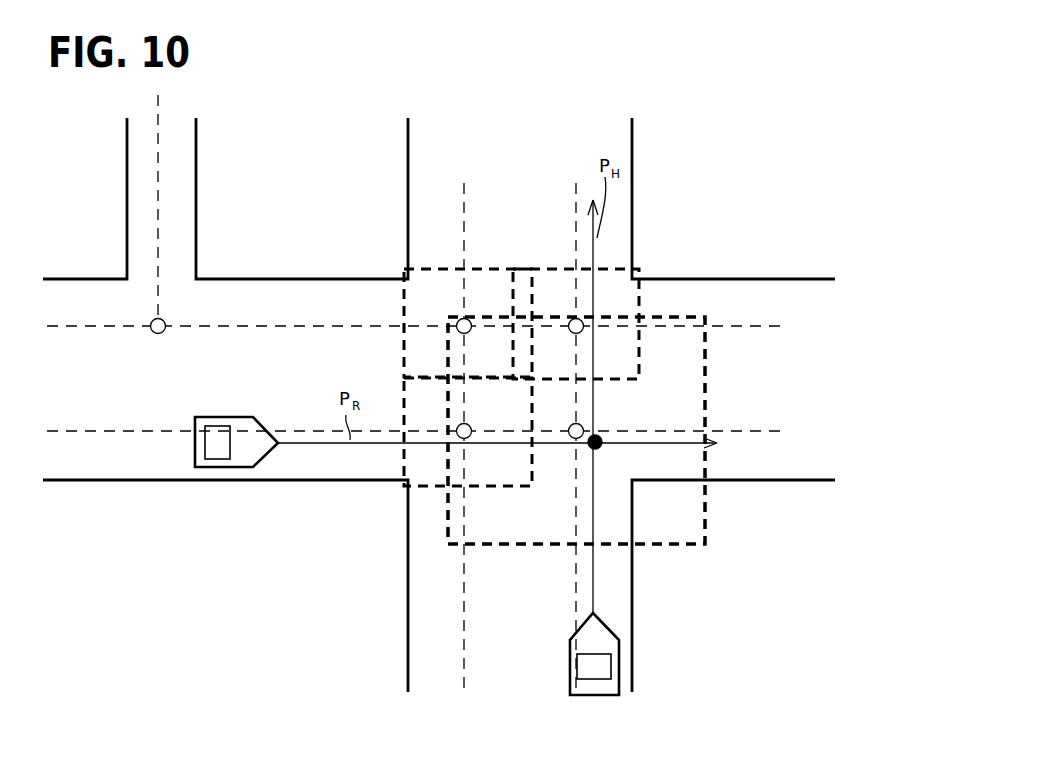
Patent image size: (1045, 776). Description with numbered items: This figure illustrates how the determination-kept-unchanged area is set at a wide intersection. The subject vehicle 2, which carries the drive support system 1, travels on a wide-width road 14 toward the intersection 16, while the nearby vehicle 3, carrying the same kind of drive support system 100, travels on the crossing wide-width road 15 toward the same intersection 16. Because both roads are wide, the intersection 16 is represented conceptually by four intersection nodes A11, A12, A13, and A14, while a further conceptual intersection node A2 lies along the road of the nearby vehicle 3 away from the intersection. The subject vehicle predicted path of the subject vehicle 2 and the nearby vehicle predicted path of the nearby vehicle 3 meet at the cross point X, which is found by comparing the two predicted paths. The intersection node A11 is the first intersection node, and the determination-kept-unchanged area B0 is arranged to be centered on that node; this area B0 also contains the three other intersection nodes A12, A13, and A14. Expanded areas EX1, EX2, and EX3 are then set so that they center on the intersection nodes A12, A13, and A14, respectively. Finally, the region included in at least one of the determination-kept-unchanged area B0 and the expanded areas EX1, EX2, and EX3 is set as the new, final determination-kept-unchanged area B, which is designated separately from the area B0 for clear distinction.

The drive support system 1 is at (597, 651).
The subject vehicle 2 is at (613, 652).
The nearby vehicle 3 is at (244, 418).
The road 14 is at (634, 565).
The road 15 is at (283, 278).
The intersection 16 is at (686, 231).
The drive support system 100 is at (213, 425).
The intersection node A2 is at (157, 343).
The intersection node A11 is at (571, 425).
The intersection node A12 is at (560, 313).
The intersection node A13 is at (480, 339).
The intersection node A14 is at (484, 422).
The expanded area EX1 is at (641, 303).
The expanded area EX2 is at (439, 266).
The expanded area EX3 is at (431, 495).
The determination-kept-unchanged area B is at (490, 556).
The determination-kept-unchanged area B0 is at (707, 378).
The cross point X is at (601, 453).